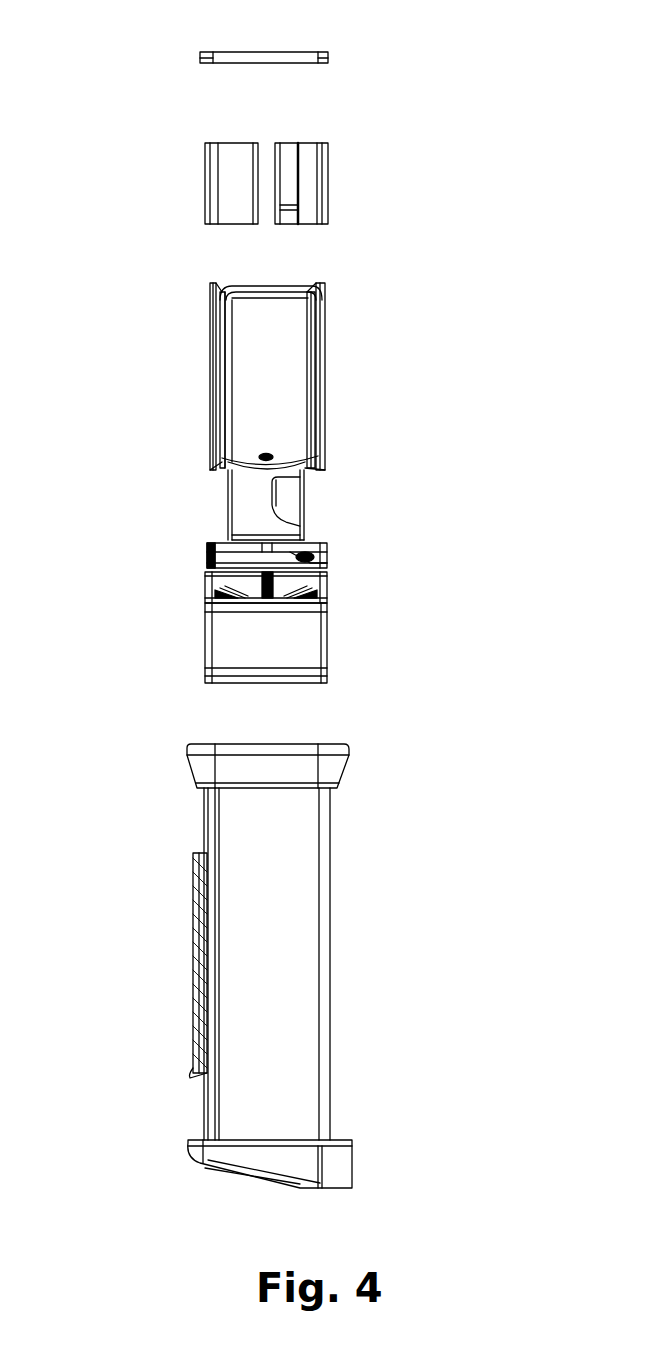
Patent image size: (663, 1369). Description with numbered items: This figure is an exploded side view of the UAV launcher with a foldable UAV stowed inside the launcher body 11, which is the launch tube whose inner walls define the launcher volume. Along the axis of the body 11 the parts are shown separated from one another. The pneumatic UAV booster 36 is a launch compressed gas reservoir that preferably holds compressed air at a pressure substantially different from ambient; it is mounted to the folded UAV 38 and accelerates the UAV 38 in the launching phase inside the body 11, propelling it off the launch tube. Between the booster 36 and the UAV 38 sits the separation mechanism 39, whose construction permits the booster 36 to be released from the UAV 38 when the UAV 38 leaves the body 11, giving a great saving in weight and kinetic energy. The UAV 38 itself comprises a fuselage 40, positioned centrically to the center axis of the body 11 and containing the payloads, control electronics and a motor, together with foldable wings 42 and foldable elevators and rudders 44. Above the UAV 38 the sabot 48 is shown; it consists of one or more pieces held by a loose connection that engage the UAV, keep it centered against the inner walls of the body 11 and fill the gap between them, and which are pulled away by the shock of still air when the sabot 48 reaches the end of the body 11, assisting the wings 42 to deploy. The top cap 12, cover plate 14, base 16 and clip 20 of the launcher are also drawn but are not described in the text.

The launcher body 11 is at (330, 1010).
The top cap 12 is at (140, 770).
The cover plate 14 is at (285, 53).
The base 16 is at (407, 1186).
The clip 20 is at (160, 995).
The pneumatic UAV booster 36 is at (370, 637).
The folded UAV 38 is at (289, 376).
The separation mechanism 39 is at (166, 582).
The fuselage 40 is at (230, 497).
The foldable wings 42 is at (210, 363).
The elevators and rudders 44 is at (318, 338).
The sabot 48 is at (205, 190).